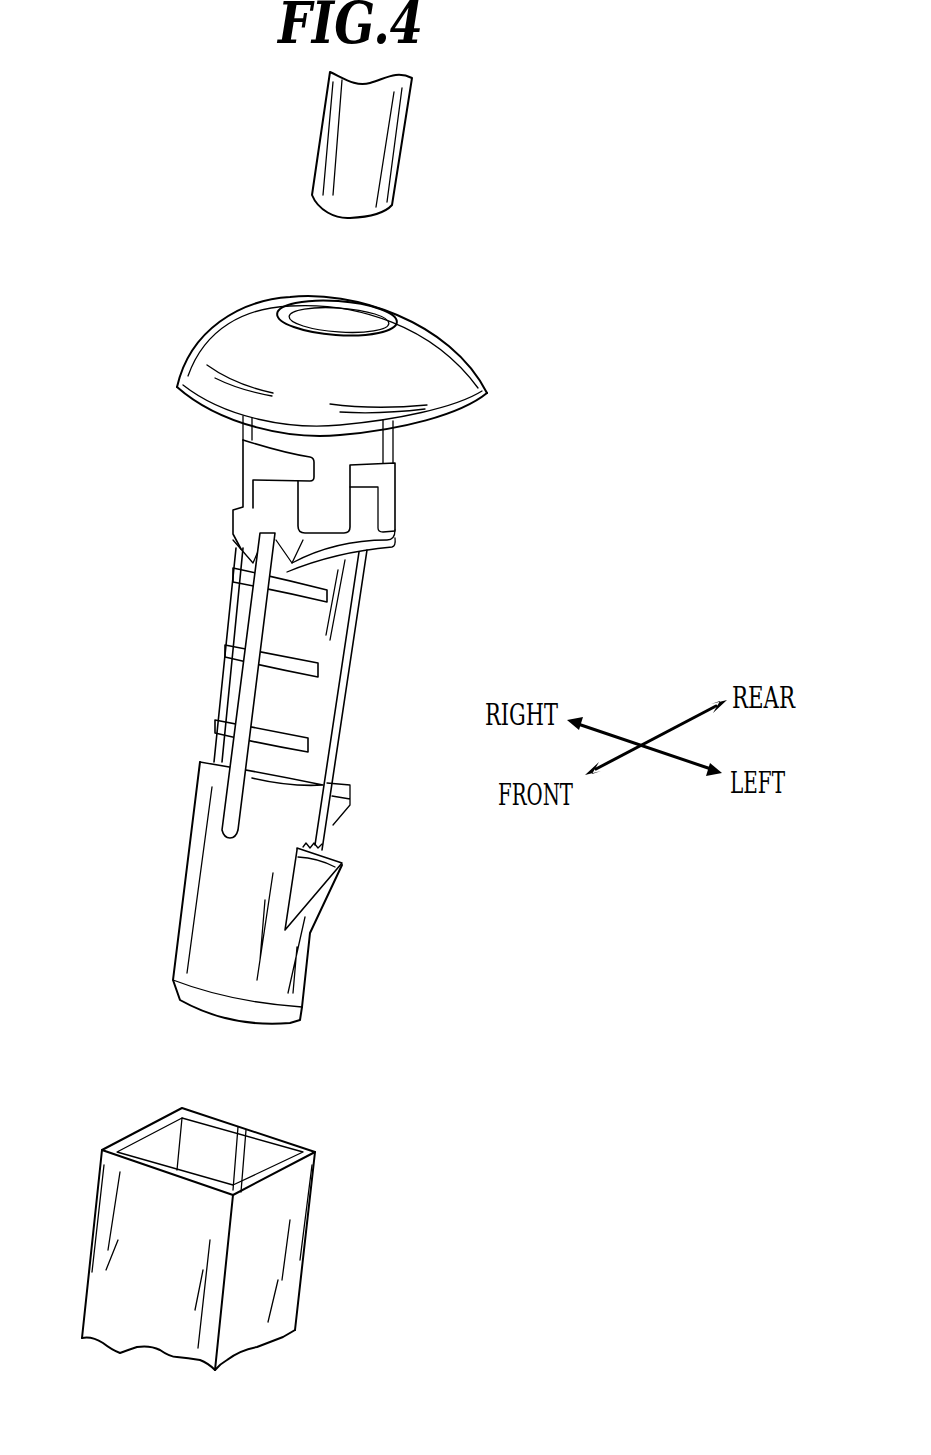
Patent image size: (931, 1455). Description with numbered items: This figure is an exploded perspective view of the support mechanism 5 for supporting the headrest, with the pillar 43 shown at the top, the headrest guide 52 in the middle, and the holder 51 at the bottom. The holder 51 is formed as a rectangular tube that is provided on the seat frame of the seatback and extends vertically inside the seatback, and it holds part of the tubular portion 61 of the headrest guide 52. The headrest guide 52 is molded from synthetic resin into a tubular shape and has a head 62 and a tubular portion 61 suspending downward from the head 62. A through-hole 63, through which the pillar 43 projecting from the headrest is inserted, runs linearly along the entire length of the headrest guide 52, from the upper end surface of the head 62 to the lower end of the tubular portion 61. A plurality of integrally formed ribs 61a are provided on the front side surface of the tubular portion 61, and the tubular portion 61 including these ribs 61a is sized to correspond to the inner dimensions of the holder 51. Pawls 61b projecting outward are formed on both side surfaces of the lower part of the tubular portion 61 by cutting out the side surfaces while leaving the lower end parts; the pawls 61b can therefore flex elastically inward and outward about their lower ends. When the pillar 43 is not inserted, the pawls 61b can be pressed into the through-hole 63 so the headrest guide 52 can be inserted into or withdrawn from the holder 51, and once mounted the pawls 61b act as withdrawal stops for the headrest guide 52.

The pillar 43 is at (390, 150).
The head 62 is at (318, 338).
The through-hole 63 is at (330, 322).
The support mechanism 5 is at (287, 893).
The headrest guide 52 is at (393, 543).
The holder 51 is at (292, 1227).
The tubular portion 61 is at (272, 778).
The ribs 61a is at (233, 575).
The pawls 61b is at (323, 903).